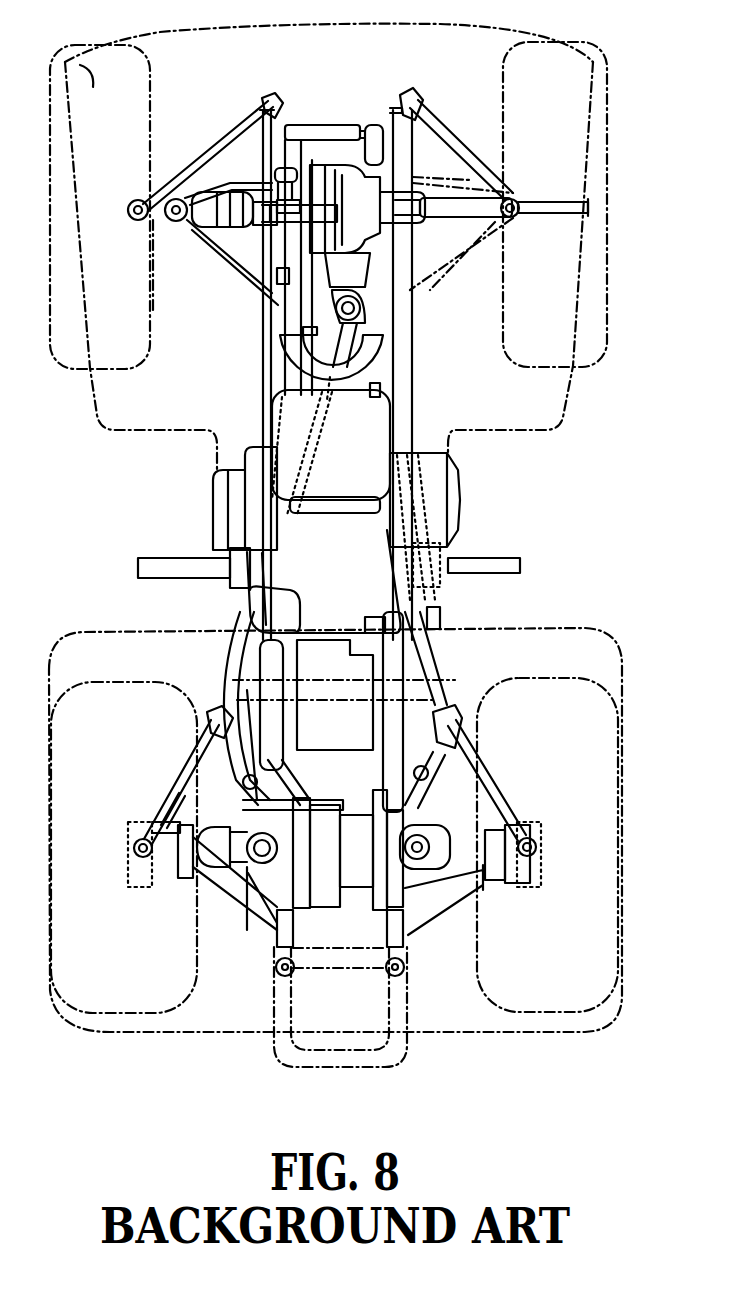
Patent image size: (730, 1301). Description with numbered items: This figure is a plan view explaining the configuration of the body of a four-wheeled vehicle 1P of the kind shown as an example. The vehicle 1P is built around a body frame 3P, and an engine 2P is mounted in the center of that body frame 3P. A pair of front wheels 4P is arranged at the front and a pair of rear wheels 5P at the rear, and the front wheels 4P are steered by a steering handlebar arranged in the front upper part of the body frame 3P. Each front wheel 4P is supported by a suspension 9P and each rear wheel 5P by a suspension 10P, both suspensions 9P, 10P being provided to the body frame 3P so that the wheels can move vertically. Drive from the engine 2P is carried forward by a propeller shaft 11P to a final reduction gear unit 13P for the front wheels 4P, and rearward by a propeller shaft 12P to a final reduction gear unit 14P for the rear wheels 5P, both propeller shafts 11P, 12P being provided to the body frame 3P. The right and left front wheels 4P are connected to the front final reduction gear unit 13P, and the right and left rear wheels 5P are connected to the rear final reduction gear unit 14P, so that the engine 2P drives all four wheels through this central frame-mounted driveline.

The vehicle 1P is at (470, 492).
The engine 2P is at (230, 478).
The body frame 3P is at (432, 625).
The front wheels 4P is at (64, 62).
The rear wheels 5P is at (130, 933).
The suspension 9P is at (222, 273).
The suspension 10P is at (425, 887).
The propeller shaft 11P is at (286, 347).
The propeller shaft 12P is at (297, 683).
The final reduction gear unit 13P is at (345, 124).
The final reduction gear unit 14P is at (331, 845).